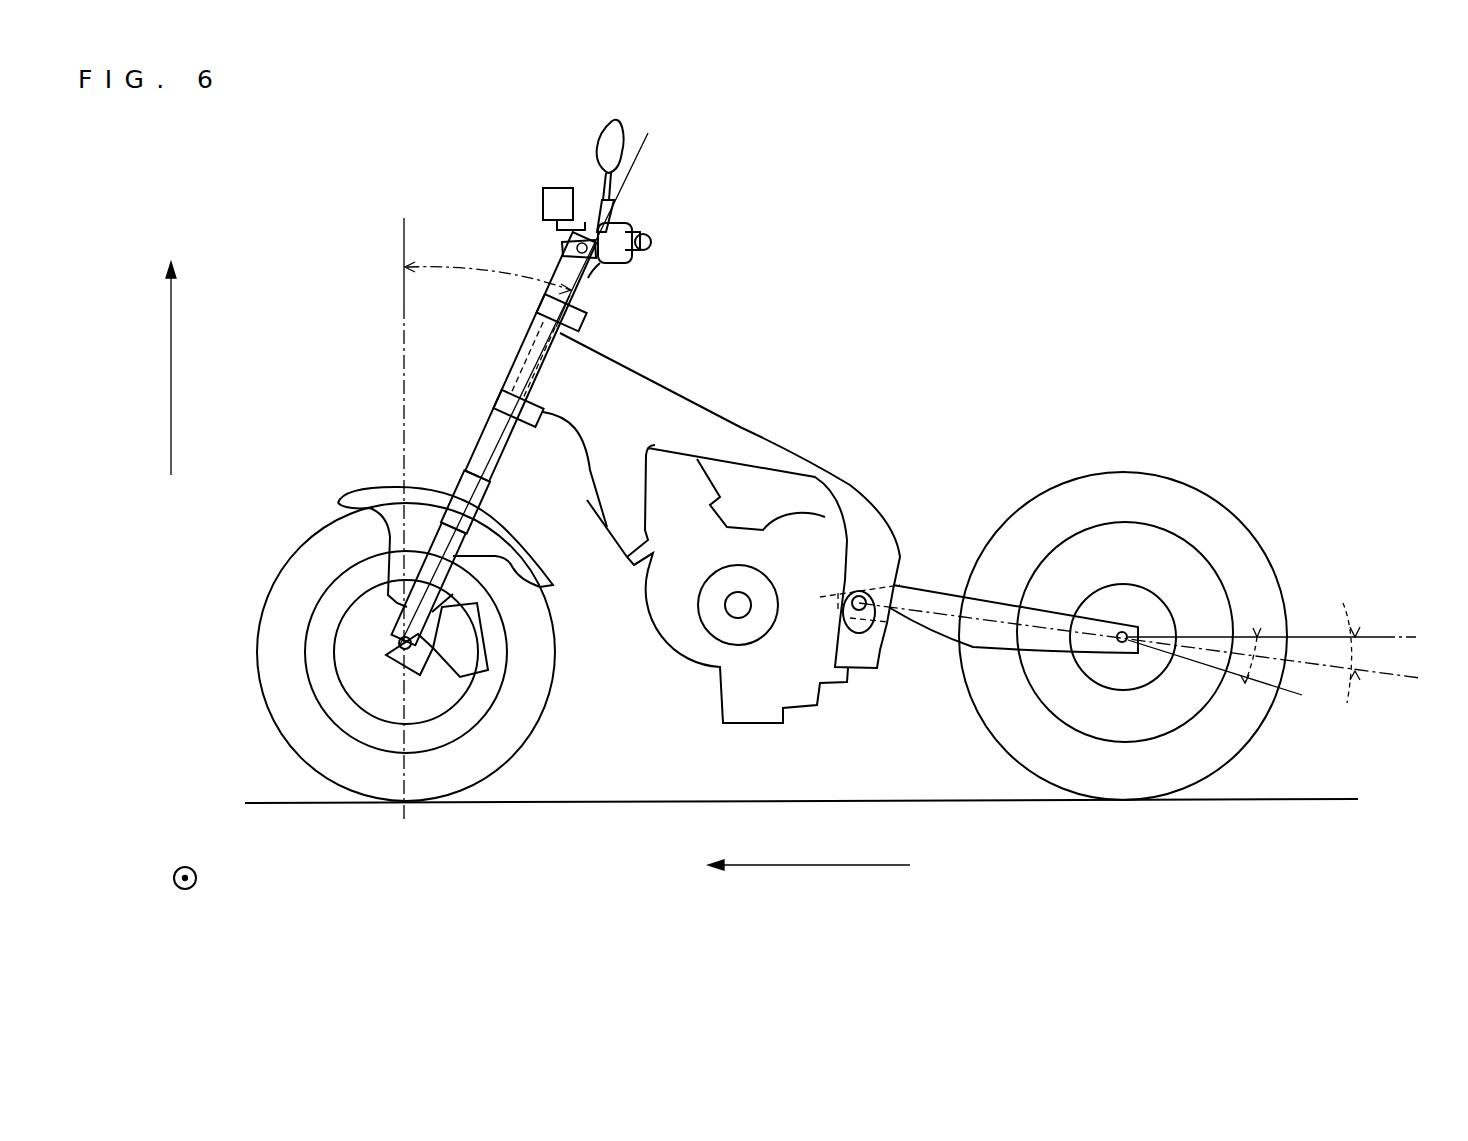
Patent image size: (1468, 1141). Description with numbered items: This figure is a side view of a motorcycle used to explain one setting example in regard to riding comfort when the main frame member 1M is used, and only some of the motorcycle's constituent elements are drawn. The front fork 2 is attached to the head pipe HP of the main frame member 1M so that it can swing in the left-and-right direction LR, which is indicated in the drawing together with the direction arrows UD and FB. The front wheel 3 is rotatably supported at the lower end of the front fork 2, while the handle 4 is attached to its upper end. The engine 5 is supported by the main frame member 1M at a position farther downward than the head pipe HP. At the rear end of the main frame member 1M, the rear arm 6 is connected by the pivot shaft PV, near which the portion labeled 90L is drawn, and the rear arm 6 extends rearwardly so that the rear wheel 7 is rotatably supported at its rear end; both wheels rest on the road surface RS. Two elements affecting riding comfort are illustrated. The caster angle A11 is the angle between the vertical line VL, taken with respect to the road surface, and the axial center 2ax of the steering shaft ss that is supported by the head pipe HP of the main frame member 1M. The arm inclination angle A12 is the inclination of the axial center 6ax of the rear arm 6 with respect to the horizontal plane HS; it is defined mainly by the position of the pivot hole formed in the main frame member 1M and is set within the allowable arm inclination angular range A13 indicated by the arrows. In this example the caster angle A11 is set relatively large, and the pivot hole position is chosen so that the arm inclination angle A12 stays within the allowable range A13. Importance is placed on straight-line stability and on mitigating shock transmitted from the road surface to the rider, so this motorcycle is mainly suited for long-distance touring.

The main frame member 1M is at (705, 417).
The front fork 2 is at (483, 450).
The axial center of the steering shaft 2ax is at (640, 155).
The front wheel 3 is at (277, 613).
The handle 4 is at (628, 222).
The engine 5 is at (685, 645).
The rear arm 6 is at (993, 637).
The axial center of the rear arm 6ax is at (1377, 675).
The rear wheel 7 is at (1175, 488).
The pivot link portion 90L is at (873, 632).
The pivot shaft PV is at (862, 593).
The head pipe HP is at (557, 370).
The steering shaft ss is at (523, 347).
The vertical line VL is at (393, 357).
The horizontal plane HS is at (1380, 635).
The road surface RS is at (1247, 798).
The caster angle A11 is at (488, 265).
The arm inclination angle A12 is at (1384, 653).
The allowable arm inclination angular range A13 is at (1215, 645).
The up-down direction UD is at (178, 375).
The front-back direction FB is at (765, 866).
The left-and-right direction LR is at (197, 873).